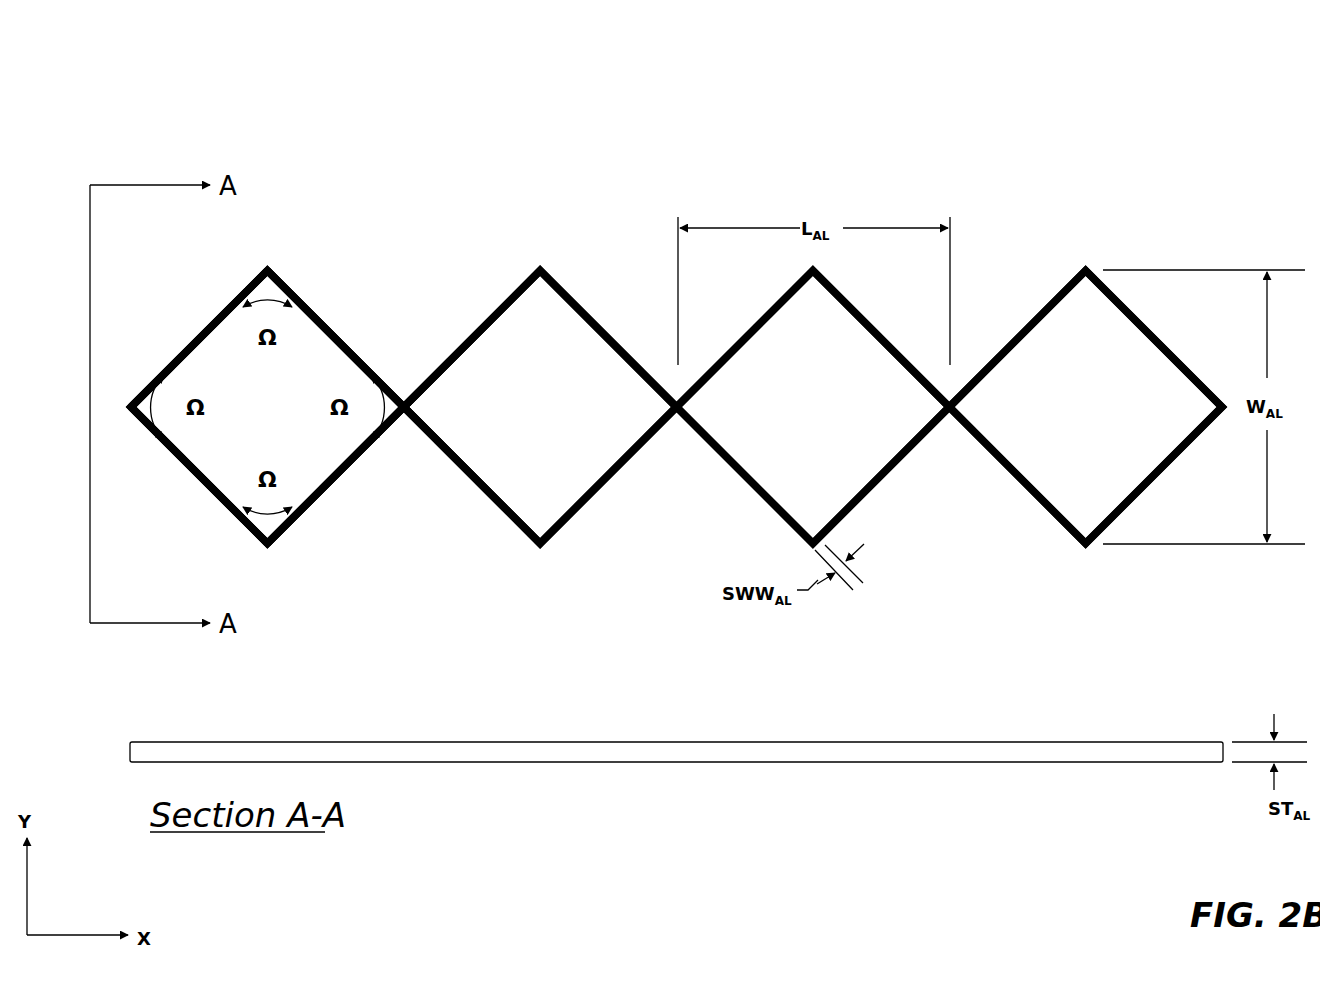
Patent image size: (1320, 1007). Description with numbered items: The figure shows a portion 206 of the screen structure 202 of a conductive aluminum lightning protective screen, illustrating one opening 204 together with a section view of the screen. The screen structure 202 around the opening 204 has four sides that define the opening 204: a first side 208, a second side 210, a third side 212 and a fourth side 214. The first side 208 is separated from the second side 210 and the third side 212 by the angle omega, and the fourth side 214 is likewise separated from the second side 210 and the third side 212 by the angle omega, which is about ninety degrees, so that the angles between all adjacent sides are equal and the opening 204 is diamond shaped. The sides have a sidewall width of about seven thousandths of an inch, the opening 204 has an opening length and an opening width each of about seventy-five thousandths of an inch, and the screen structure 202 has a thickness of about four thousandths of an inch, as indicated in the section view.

The screen structure 202 is at (600, 329).
The opening 204 is at (563, 420).
The portion 206 is at (1204, 120).
The first side 208 is at (200, 330).
The second side 210 is at (340, 333).
The third side 212 is at (200, 480).
The fourth side 214 is at (340, 476).